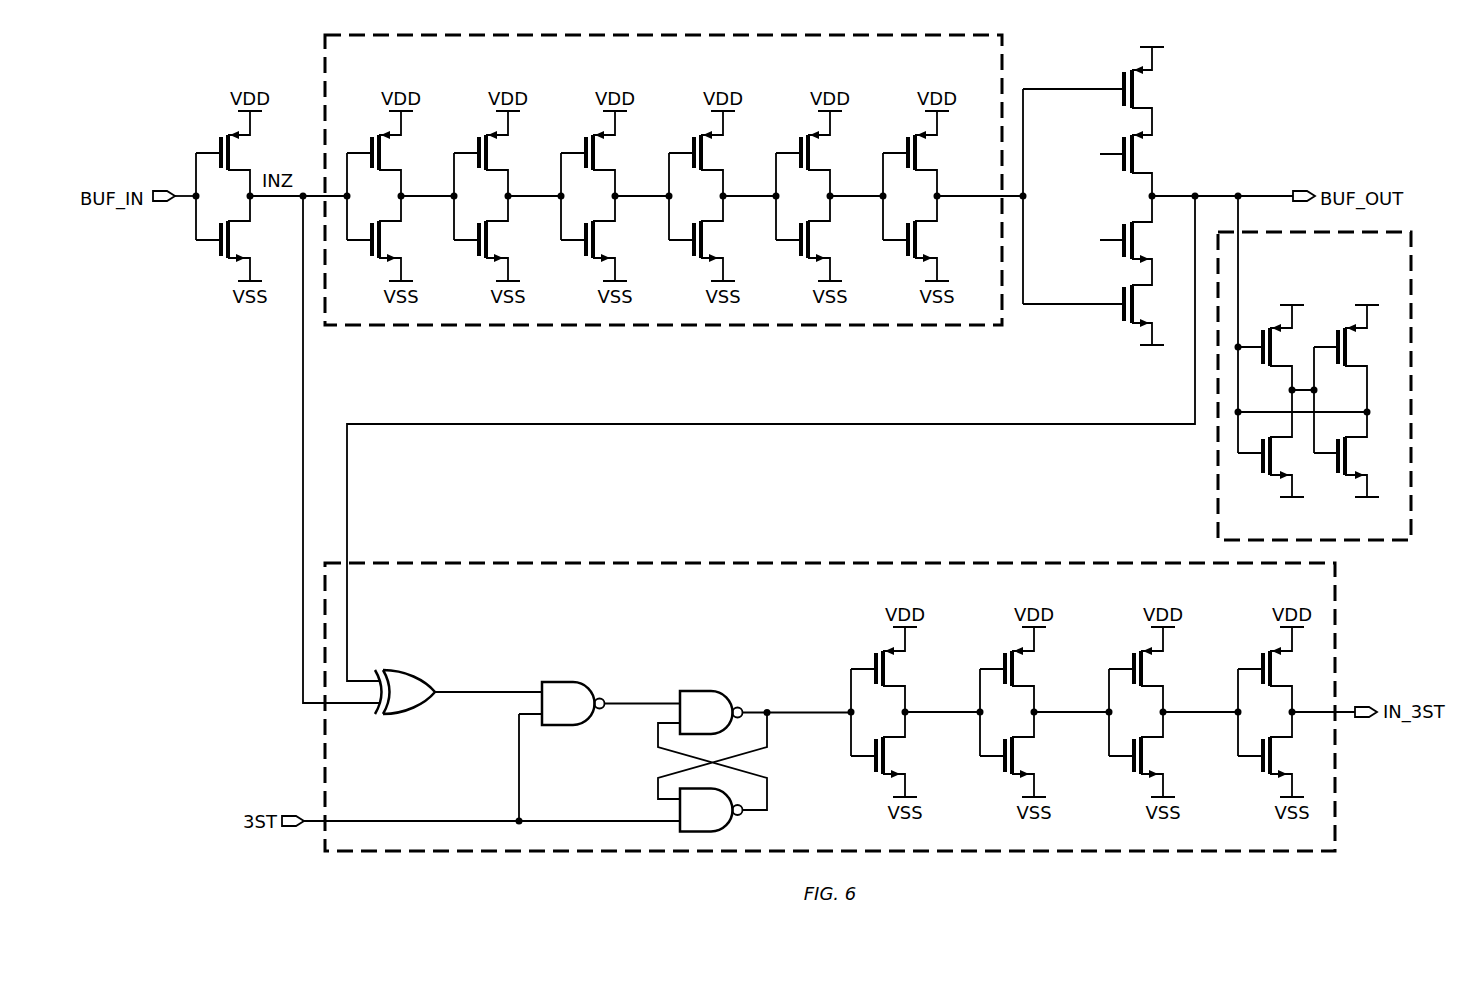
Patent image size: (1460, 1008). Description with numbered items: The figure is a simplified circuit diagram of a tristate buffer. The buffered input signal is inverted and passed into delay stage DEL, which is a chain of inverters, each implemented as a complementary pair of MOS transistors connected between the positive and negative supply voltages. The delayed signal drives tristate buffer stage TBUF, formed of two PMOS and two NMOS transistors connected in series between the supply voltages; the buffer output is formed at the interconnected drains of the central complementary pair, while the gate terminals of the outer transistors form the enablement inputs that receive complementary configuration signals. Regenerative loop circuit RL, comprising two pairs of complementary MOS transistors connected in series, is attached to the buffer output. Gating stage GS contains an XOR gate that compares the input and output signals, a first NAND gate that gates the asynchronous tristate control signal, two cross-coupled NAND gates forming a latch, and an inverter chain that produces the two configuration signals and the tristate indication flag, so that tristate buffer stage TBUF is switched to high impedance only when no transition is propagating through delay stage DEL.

The delay stage DEL is at (663, 180).
The tristate buffer stage TBUF is at (1207, 127).
The regenerative loop circuit RL is at (1314, 386).
The gating stage GS is at (828, 707).